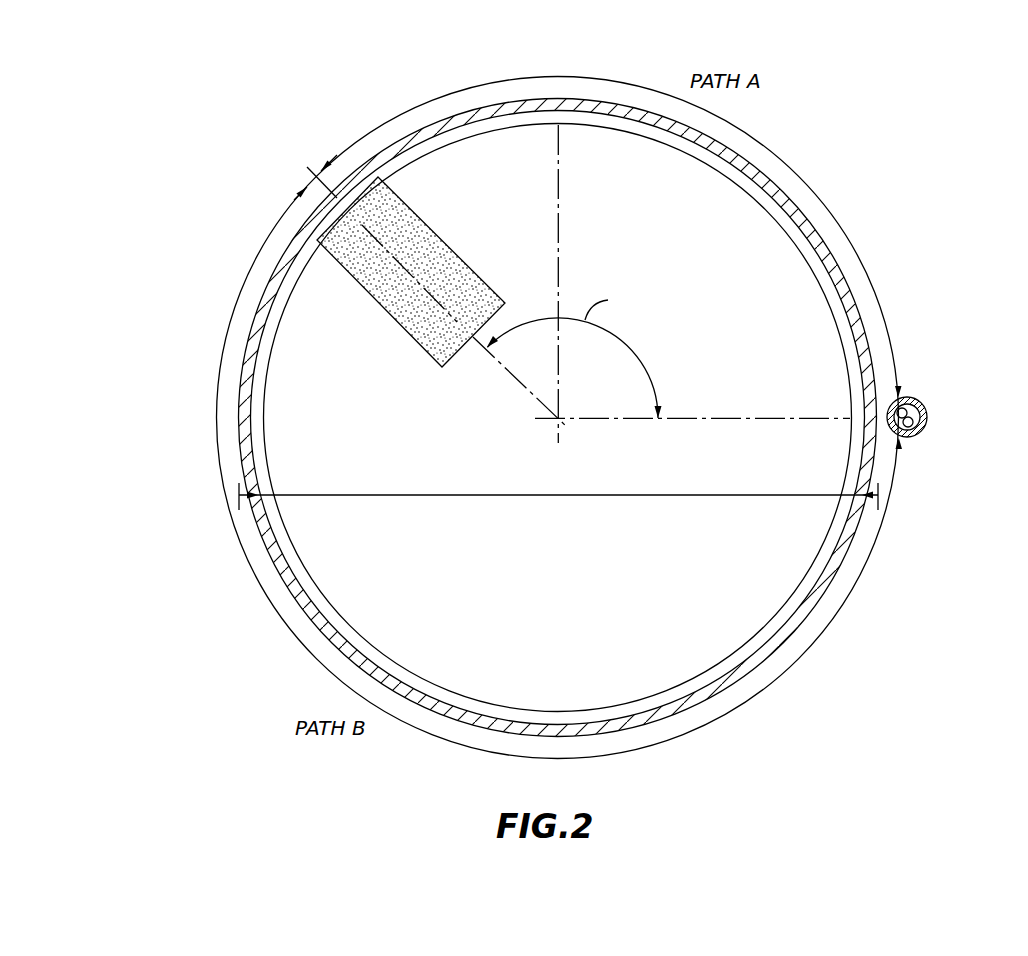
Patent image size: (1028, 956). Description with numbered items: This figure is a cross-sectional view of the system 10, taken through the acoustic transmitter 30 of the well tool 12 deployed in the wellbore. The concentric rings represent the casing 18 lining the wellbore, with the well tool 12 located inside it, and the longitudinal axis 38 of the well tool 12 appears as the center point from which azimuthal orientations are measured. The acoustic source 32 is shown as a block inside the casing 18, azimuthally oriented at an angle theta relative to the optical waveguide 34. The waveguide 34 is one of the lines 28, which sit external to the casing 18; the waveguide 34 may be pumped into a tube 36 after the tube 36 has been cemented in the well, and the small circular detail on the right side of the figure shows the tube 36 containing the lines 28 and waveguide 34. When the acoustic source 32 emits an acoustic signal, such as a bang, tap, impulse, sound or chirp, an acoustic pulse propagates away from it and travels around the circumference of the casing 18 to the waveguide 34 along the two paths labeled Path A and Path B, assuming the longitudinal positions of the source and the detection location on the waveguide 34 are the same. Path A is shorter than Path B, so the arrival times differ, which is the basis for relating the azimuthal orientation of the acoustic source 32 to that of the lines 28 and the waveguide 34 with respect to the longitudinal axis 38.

The system 10 is at (943, 152).
The well tool 12 is at (230, 321).
The casing 18 is at (653, 725).
The lines 28 is at (915, 417).
The acoustic transmitter 30 is at (320, 601).
The acoustic source 32 is at (372, 297).
The optical waveguide 34 is at (921, 402).
The tube 36 is at (921, 432).
The longitudinal axis 38 is at (557, 422).